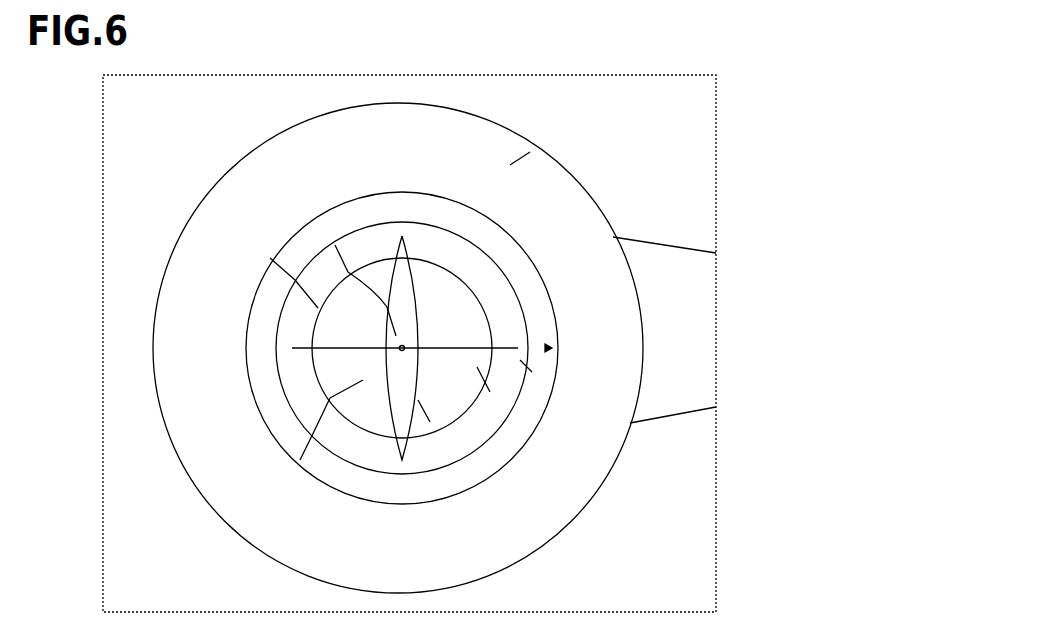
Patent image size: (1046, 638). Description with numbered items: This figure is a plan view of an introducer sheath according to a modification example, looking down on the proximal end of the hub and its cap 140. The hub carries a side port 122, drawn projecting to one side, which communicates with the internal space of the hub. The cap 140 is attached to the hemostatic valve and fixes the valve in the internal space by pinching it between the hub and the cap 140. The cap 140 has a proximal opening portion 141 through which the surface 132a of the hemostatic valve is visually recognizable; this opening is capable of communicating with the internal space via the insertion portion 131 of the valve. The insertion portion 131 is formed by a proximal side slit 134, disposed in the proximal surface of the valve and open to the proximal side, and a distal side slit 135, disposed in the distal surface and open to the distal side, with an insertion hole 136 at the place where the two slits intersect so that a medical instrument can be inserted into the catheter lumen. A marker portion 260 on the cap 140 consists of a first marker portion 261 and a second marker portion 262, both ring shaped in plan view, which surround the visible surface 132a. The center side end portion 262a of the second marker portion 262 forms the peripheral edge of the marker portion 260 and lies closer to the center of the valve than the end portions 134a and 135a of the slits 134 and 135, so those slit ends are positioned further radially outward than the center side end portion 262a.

The side port 122 is at (695, 333).
The insertion portion 131 is at (428, 318).
The surface of the hemostatic valve 132a is at (300, 460).
The proximal side slit 134 is at (490, 392).
The end portion of the proximal side slit 134a is at (283, 392).
The distal side slit 135 is at (430, 422).
The end portion of the distal side slit 135a is at (403, 537).
The insertion hole 136 is at (335, 245).
The cap 140 is at (530, 152).
The proximal opening portion 141 is at (552, 348).
The marker portion 260 is at (593, 150).
The first marker portion 261 is at (540, 312).
The second marker portion 262 is at (497, 303).
The center side end portion of the second marker portion 262a is at (270, 258).